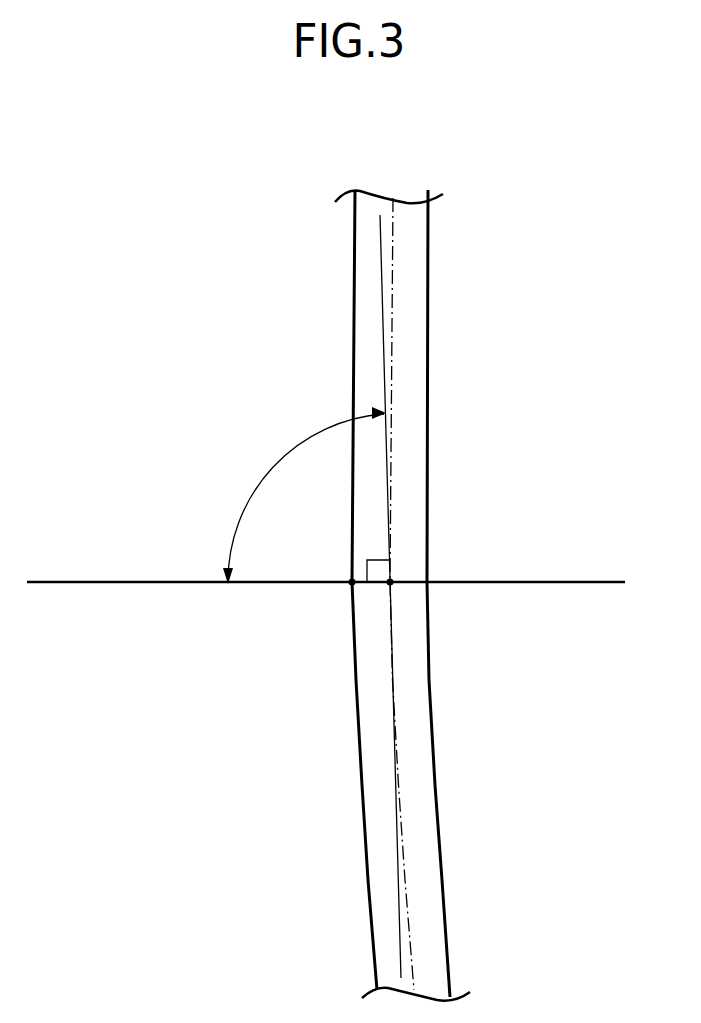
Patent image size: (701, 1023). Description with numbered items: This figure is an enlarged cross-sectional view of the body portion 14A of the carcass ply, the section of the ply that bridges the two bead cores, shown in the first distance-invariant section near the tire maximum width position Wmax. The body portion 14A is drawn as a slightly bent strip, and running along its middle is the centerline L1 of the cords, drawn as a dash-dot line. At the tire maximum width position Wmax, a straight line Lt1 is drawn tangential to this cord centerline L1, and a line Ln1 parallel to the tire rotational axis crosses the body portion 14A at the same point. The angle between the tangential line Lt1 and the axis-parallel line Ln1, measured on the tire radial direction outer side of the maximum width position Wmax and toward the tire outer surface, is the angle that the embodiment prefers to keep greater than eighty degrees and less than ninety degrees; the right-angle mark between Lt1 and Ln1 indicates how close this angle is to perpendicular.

The body portion 14A is at (428, 258).
The tangential line Lt1 is at (380, 271).
The centerline of the cords L1 is at (392, 623).
The line parallel to the tire rotational axis Ln1 is at (68, 582).
The tire maximum width position Wmax is at (352, 583).